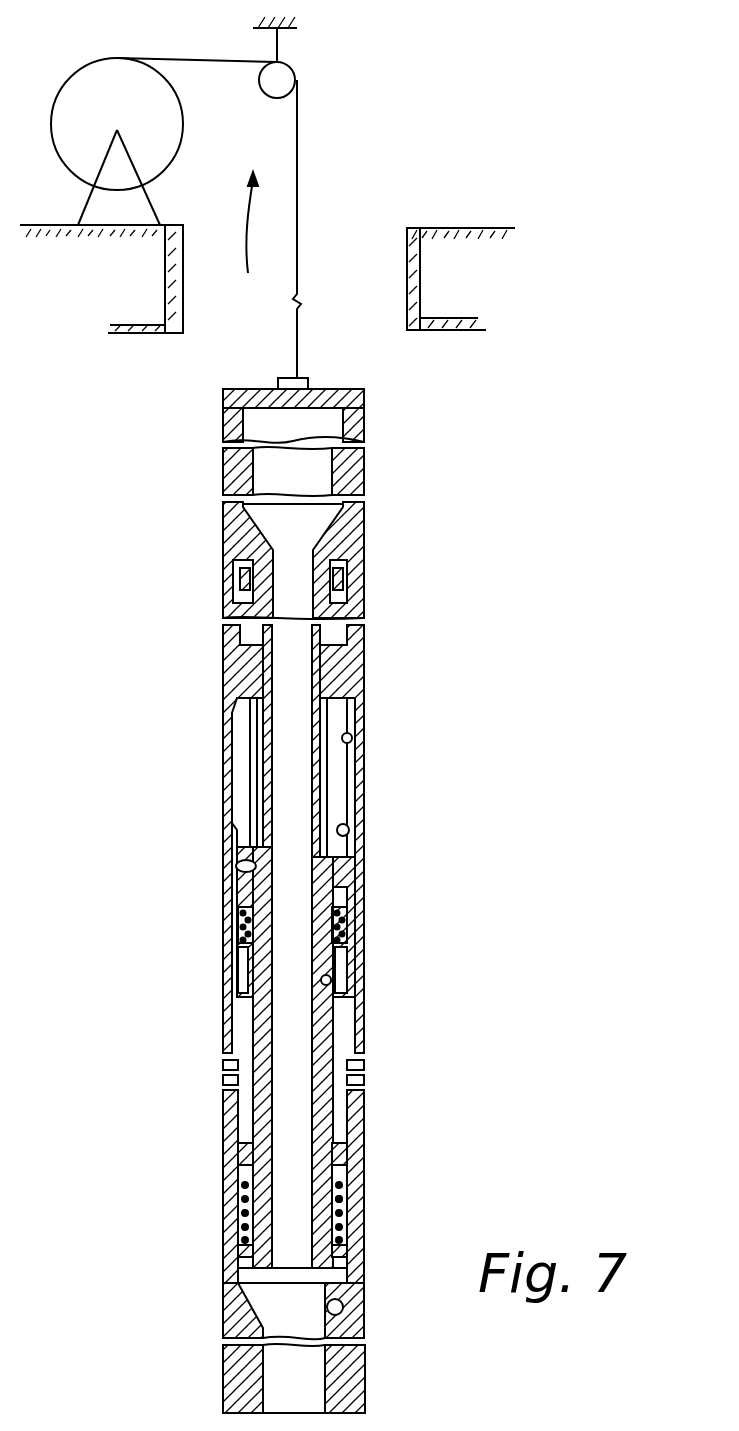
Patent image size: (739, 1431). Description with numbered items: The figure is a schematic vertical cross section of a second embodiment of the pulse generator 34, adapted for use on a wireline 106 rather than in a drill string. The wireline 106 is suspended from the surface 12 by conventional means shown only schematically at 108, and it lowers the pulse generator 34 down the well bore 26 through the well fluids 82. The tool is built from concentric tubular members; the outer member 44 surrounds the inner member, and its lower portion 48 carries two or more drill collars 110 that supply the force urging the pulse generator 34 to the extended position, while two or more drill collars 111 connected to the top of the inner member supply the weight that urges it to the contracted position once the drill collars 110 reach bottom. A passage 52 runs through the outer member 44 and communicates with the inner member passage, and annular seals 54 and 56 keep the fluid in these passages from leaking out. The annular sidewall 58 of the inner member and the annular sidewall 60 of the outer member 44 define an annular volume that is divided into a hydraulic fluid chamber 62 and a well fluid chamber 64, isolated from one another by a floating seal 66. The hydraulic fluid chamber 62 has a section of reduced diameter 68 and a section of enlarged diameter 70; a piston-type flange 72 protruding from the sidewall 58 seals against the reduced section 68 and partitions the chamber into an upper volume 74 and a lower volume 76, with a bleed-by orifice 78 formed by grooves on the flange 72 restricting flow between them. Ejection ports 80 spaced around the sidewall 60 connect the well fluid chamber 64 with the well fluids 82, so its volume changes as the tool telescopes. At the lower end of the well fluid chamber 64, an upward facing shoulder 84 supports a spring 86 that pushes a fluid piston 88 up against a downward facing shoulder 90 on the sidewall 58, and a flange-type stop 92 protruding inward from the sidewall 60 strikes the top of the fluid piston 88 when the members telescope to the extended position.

The surface 12 is at (460, 232).
The well bore 26 is at (407, 275).
The pulse generator 34 is at (432, 917).
The outer member 44 is at (223, 1293).
The lower portion of outer member 48 is at (240, 1315).
The passage of outer member 52 is at (343, 1302).
The annular seal 54 is at (340, 582).
The annular seal 56 is at (347, 1253).
The annular sidewall of inner member 58 is at (262, 1012).
The annular sidewall of outer member 60 is at (233, 967).
The hydraulic fluid chamber 62 is at (242, 762).
The well fluid chamber 64 is at (337, 1015).
The floating seal 66 is at (237, 930).
The section of reduced diameter 68 is at (349, 827).
The section of enlarged diameter 70 is at (352, 738).
The piston-type flange 72 is at (240, 857).
The upper volume 74 is at (242, 723).
The lower volume 76 is at (337, 897).
The bleed-by orifice 78 is at (253, 882).
The ejection ports 80 is at (222, 1058).
The well fluids 82 is at (428, 1083).
The upward facing shoulder 84 is at (245, 1243).
The spring 86 is at (347, 1202).
The fluid piston 88 is at (245, 1190).
The downward facing shoulder 90 is at (347, 1187).
The flange-type stop 92 is at (331, 980).
The wireline 106 is at (298, 172).
The conventional suspension means 108 is at (230, 233).
The drill collars 110 is at (365, 1378).
The drill collars 111 is at (365, 475).